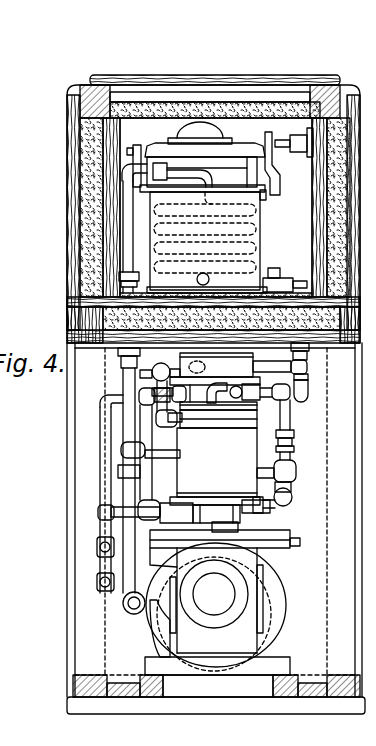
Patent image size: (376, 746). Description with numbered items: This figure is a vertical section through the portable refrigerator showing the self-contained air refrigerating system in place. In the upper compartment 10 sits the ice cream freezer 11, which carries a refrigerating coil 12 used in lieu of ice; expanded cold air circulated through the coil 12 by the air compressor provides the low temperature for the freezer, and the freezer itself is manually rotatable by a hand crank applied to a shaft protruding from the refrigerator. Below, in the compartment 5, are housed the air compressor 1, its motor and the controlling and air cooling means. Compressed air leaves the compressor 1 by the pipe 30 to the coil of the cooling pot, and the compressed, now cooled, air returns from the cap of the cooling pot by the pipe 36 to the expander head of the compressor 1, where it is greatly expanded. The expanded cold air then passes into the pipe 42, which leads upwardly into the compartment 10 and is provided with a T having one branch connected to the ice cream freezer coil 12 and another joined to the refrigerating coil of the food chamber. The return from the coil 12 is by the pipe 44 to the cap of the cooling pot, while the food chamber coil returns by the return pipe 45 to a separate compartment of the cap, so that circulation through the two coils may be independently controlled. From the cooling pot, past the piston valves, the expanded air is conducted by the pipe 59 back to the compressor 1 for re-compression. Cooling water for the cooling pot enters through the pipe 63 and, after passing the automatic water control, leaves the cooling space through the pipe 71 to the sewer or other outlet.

The air compressor 1 is at (215, 480).
The compartment 5 is at (226, 602).
The compartment 10 is at (216, 394).
The ice cream freezer 11 is at (252, 247).
The refrigerating coil 12 is at (150, 258).
The pipe 30 is at (252, 407).
The pipe 36 is at (166, 362).
The pipe 42 is at (122, 215).
The pipe 44 is at (293, 277).
The return pipe 45 is at (122, 594).
The pipe 59 is at (295, 486).
The pipe 63 is at (112, 525).
The pipe 71 is at (122, 458).